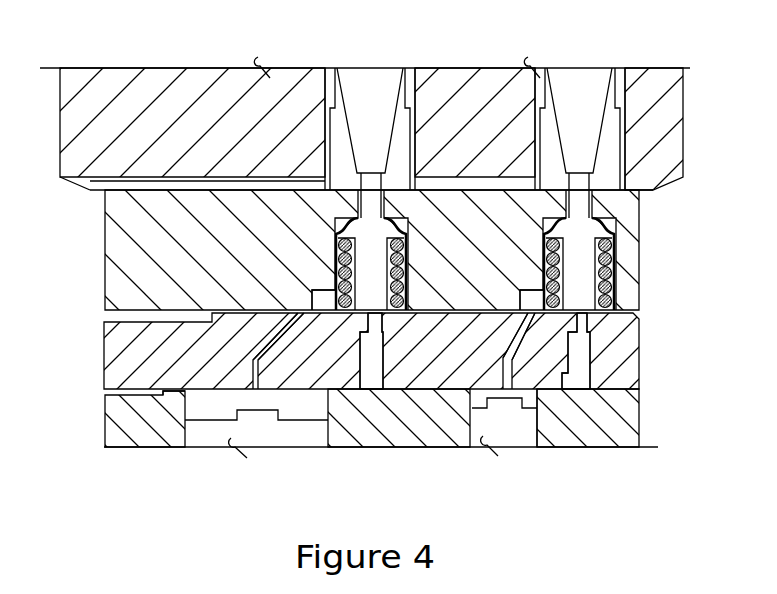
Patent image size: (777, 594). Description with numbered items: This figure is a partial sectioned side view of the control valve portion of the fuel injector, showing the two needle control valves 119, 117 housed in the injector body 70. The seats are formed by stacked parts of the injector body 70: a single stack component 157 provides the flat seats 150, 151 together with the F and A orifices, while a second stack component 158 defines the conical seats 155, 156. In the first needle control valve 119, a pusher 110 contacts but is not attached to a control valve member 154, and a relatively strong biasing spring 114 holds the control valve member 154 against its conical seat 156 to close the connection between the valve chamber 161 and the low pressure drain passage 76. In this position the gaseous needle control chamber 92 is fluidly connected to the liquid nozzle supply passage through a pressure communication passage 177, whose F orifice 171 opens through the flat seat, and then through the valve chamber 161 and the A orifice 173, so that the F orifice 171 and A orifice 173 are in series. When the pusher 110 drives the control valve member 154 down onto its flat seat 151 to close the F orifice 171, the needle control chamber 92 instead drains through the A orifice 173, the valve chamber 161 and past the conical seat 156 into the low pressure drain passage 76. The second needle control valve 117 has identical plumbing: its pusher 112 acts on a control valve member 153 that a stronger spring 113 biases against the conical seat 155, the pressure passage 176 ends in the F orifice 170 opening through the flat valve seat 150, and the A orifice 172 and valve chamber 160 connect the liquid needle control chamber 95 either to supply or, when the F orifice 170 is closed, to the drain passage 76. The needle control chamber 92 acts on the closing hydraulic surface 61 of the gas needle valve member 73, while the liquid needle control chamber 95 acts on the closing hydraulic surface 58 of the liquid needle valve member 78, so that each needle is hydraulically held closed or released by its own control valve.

The injector body 70 is at (693, 157).
The low pressure drain passage 76 is at (84, 188).
The pusher 110 is at (337, 68).
The pusher 112 is at (616, 70).
The second needle control valve 117 is at (617, 211).
The second stack component 158 is at (104, 208).
The needle control valve 119 is at (285, 234).
The conical seat 156 is at (348, 222).
The control valve member 154 is at (383, 223).
The valve chamber 161 is at (337, 242).
The biasing spring 114 is at (410, 246).
The flat seat 151 is at (360, 308).
The flat valve seat 150 is at (583, 305).
The conical seat 155 is at (612, 232).
The control valve member 153 is at (603, 247).
The valve chamber 160 is at (605, 266).
The spring 113 is at (610, 290).
The stack component 157 is at (104, 360).
The A orifice 173 is at (252, 358).
The A orifice 172 is at (505, 358).
The F orifice 170 is at (590, 322).
The pressure passage 176 is at (590, 365).
The F orifice 171 is at (365, 315).
The pressure communication passage 177 is at (380, 372).
The gaseous needle control chamber 92 is at (183, 404).
The gas needle valve member 73 is at (182, 433).
The closing hydraulic surface 61 is at (248, 408).
The closing hydraulic surface 58 is at (478, 404).
The liquid needle valve member 78 is at (545, 430).
The liquid needle control chamber 95 is at (548, 404).